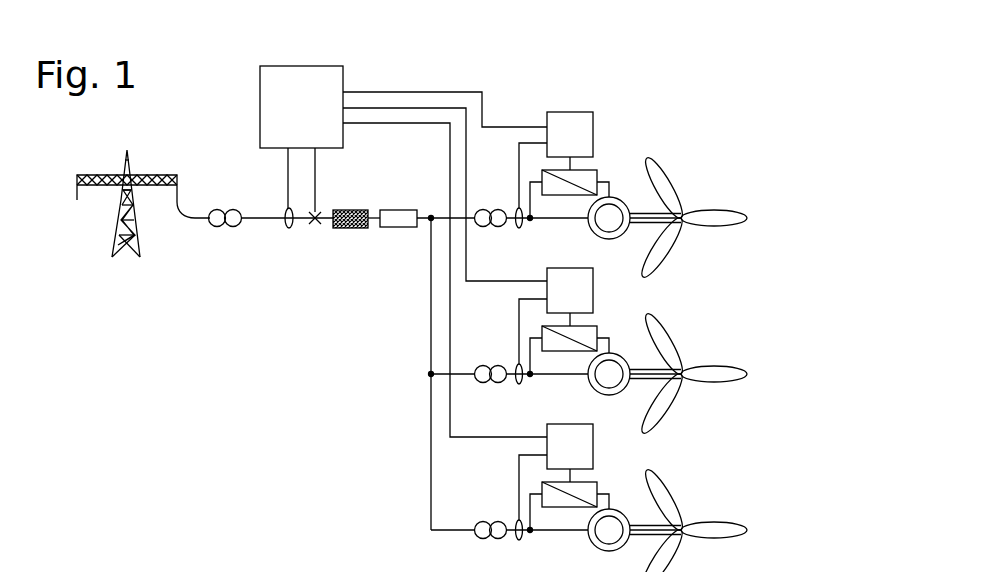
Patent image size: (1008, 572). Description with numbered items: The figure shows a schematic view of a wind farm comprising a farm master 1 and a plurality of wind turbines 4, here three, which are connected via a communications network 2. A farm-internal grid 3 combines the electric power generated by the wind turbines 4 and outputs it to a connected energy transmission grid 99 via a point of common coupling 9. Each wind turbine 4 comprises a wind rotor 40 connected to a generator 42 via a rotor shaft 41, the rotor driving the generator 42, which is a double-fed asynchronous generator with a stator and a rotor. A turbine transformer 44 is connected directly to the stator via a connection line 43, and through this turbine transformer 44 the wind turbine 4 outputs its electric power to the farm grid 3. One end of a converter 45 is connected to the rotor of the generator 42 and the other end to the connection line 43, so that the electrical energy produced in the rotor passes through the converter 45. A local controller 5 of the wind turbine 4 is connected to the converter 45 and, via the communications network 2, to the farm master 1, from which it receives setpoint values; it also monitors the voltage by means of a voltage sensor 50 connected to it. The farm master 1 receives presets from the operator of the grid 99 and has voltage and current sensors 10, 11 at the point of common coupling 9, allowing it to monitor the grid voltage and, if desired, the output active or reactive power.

The farm master 1 is at (260, 112).
The communications network 2 is at (482, 108).
The farm-internal grid 3 is at (431, 432).
The wind turbine 4 is at (609, 311).
The local controller 5 is at (572, 111).
The point of common coupling 9 is at (255, 222).
The voltage sensor 10 is at (288, 230).
The current sensor 11 is at (316, 228).
The wind rotor 40 is at (657, 166).
The rotor shaft 41 is at (642, 214).
The generator 42 is at (609, 241).
The connection line 43 is at (547, 227).
The turbine transformer 44 is at (490, 228).
The converter 45 is at (591, 170).
The voltage sensor 50 is at (513, 204).
The energy transmission grid 99 is at (112, 228).